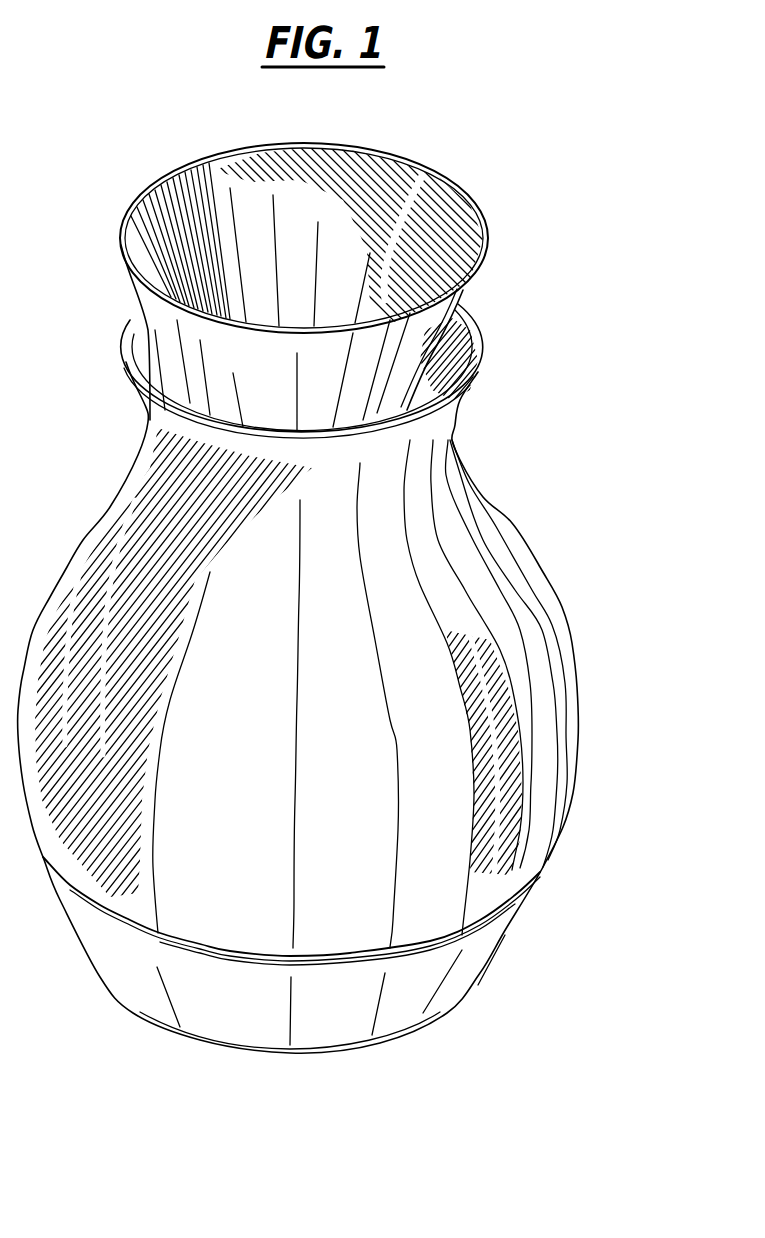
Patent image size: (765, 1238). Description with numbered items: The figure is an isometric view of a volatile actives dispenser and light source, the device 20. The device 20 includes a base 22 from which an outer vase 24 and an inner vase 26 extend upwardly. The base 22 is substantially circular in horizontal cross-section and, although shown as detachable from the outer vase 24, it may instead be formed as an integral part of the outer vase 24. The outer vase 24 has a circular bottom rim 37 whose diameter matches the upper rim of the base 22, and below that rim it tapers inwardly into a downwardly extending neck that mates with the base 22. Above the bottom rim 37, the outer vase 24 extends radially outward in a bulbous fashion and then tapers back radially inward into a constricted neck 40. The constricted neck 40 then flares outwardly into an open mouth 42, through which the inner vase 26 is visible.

The device 20 is at (578, 400).
The base 22 is at (122, 972).
The outer vase 24 is at (412, 627).
The inner vase 26 is at (167, 208).
The bottom rim 37 is at (507, 900).
The constricted neck 40 is at (456, 434).
The open mouth 42 is at (477, 316).